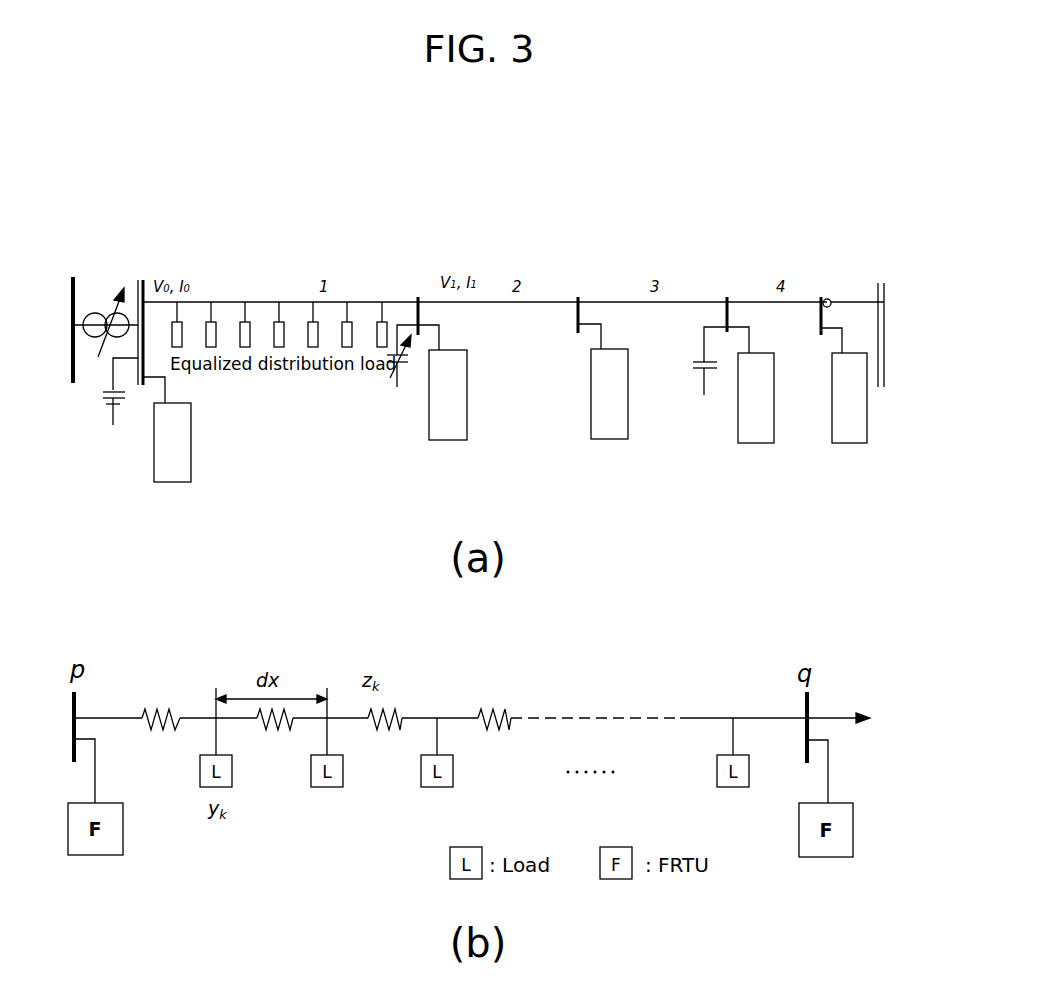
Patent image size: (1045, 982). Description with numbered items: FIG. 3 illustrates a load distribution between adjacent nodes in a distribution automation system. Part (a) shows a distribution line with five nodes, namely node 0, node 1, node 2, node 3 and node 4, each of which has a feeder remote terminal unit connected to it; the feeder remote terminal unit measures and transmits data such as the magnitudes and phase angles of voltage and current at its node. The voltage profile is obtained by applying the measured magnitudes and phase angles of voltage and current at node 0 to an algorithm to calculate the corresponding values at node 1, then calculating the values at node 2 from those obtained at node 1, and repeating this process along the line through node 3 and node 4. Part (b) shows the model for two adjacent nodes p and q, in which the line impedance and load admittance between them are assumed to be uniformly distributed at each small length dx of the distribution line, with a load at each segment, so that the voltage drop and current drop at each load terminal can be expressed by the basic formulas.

The node 0 is at (159, 366).
The node 1 is at (427, 350).
The node 2 is at (595, 351).
The node 3 is at (733, 353).
The node 4 is at (836, 353).